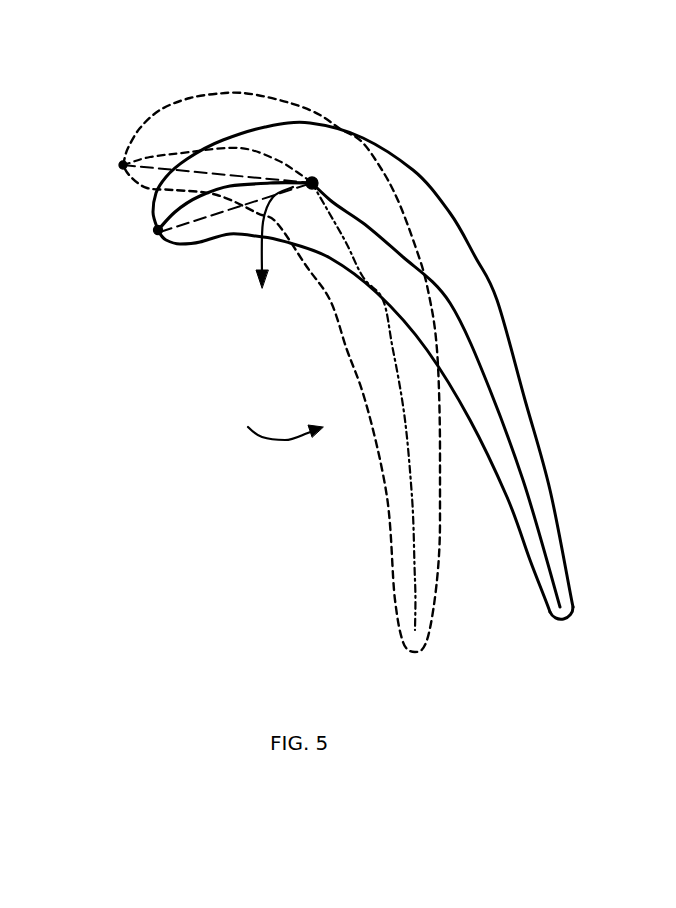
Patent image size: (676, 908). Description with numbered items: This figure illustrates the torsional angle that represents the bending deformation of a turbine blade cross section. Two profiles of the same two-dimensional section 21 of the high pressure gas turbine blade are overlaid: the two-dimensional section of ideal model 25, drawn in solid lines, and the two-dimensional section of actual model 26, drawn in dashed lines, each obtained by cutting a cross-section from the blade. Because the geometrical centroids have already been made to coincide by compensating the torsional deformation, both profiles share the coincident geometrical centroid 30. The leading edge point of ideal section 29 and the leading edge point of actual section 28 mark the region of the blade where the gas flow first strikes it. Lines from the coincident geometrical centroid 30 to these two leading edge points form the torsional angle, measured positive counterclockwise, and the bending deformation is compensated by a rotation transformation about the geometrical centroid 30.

The 2D section 21 is at (265, 422).
The 2D section of ideal model 25 is at (509, 330).
The 2D section of actual model 26 is at (268, 97).
The leading edge point of actual section 28 is at (120, 165).
The leading edge point of ideal section 29 is at (153, 237).
The coincident geometrical centroid 30 is at (322, 176).